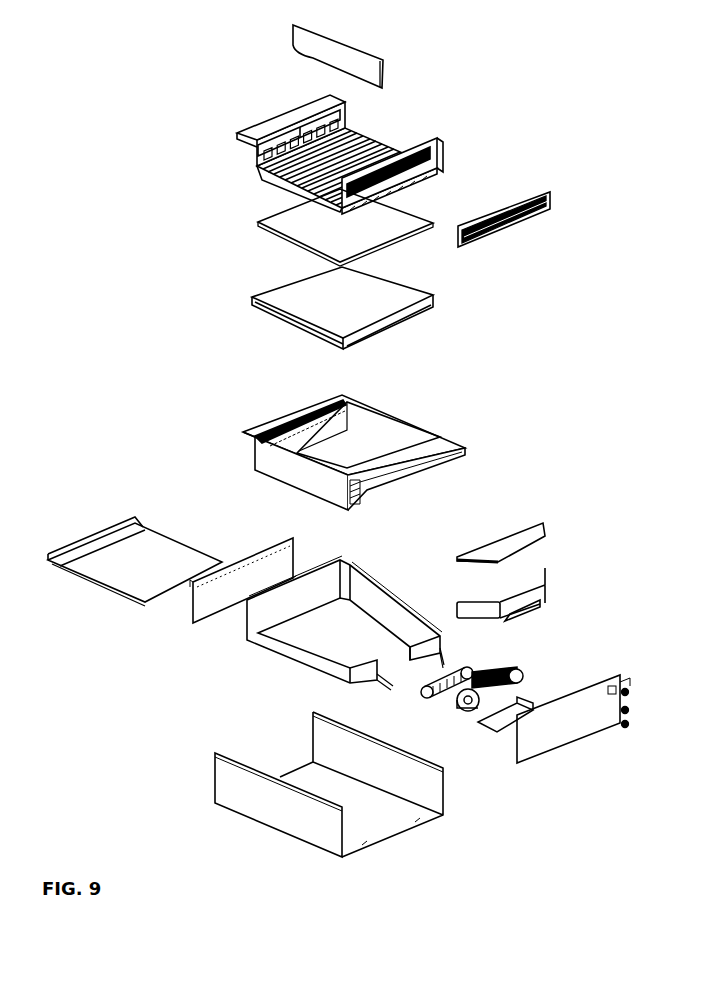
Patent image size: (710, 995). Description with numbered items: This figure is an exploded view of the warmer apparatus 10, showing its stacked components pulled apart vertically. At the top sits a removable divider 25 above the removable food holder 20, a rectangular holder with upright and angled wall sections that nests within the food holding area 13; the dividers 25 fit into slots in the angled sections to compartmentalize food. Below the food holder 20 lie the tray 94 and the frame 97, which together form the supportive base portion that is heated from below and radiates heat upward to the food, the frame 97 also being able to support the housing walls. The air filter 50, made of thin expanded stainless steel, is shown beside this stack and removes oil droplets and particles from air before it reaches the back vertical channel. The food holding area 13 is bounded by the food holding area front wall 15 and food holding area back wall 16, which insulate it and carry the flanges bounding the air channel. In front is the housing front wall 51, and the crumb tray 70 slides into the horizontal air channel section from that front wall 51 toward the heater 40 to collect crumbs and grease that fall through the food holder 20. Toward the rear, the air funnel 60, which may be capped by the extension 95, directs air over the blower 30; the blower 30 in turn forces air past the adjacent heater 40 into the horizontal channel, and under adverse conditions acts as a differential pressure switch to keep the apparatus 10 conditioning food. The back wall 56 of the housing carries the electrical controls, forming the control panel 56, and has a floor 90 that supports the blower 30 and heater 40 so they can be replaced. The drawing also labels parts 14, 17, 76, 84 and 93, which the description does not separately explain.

The warmer apparatus 10 is at (173, 316).
The food holding area 13 is at (357, 449).
The housing 14 is at (308, 769).
The food holding area front wall 15 is at (242, 455).
The food holding area back wall 16 is at (456, 468).
The side walls 17 is at (354, 458).
The removable food holder 20 is at (377, 137).
The removable dividers 25 is at (330, 61).
The blower 30 is at (522, 675).
The heater 40 is at (470, 669).
The air filter 50 is at (499, 244).
The front wall 51 is at (267, 546).
The back wall / control panel 56 is at (578, 729).
The air funnel 60 is at (537, 598).
The crumb tray 70 is at (131, 585).
The front wall 76 is at (214, 747).
The corner bracket 84 is at (361, 495).
The floor 90 is at (493, 732).
The bottom tray 93 is at (293, 333).
The tray 94 is at (254, 221).
The extension 95 is at (494, 535).
The frame 97 is at (383, 610).